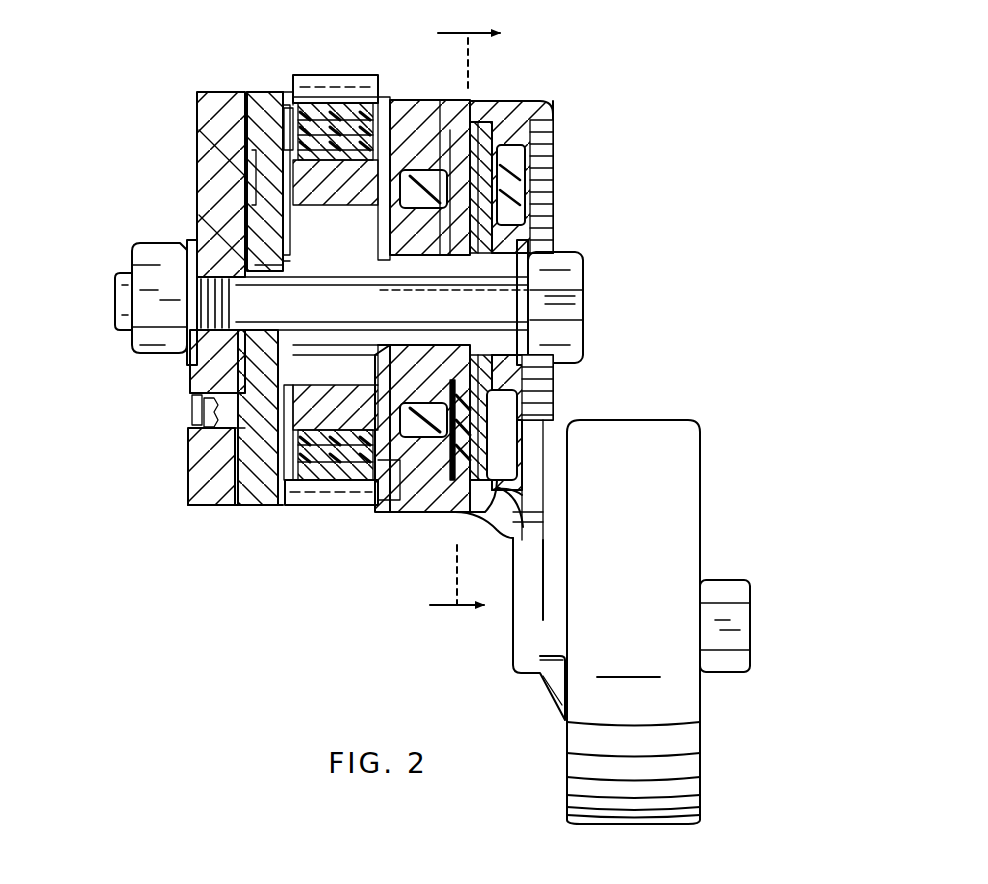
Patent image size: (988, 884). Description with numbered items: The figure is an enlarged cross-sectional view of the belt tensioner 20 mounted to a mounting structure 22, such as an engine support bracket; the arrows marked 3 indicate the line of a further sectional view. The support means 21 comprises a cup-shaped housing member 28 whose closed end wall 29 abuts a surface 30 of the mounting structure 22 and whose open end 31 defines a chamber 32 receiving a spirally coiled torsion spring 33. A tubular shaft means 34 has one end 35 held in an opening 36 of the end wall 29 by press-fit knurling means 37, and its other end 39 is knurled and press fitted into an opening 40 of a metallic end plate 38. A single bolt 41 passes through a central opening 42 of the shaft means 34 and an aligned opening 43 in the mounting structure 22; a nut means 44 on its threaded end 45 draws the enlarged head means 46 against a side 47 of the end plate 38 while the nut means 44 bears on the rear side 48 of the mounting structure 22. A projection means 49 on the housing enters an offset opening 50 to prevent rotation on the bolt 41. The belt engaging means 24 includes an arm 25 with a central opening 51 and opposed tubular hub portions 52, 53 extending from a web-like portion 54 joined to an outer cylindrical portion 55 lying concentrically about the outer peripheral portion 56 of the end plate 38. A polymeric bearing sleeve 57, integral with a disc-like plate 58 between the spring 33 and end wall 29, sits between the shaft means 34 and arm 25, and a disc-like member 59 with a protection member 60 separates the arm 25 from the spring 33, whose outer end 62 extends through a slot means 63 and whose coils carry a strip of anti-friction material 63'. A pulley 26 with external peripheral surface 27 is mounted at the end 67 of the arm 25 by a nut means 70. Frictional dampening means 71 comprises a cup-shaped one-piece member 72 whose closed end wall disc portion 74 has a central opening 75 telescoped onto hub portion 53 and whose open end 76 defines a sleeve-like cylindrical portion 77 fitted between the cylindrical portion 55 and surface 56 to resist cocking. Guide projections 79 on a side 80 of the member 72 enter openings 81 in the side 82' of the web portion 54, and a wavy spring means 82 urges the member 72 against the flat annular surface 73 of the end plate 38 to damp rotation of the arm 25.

The section line 3- 3 is at (465, 326).
The belt tensioner 20 is at (648, 144).
The support means 21 is at (273, 96).
The mounting structure 22 is at (197, 123).
The belt engaging means 24 is at (390, 524).
The belt engaging arm 25 is at (516, 127).
The pulley 26 is at (703, 482).
The external peripheral surface 27 is at (700, 440).
The cup-shaped housing member 28 is at (302, 502).
The closed end wall 29 is at (240, 470).
The surface 30 is at (238, 494).
The open end 31 is at (342, 497).
The chamber 32 is at (318, 507).
The torsion spring 33 is at (338, 122).
The tubular shaft means 34 is at (542, 212).
The one end 35 is at (242, 368).
The opening 36 is at (272, 336).
The press-fit knurling means 37 is at (242, 233).
The end plate 38 is at (538, 248).
The other end 39 is at (566, 370).
The opening 40 is at (390, 286).
The bolt 41 is at (382, 412).
The central opening 42 is at (590, 300).
The aligned opening 43 is at (184, 282).
The nut means 44 is at (188, 342).
The threaded end 45 is at (118, 297).
The enlarged head means 46 is at (592, 272).
The side 47 is at (562, 405).
The rear side 48 is at (245, 182).
The projection means 49 is at (212, 412).
The opening 50 is at (216, 428).
The opening 51 is at (392, 263).
The tubular hub portion 52 is at (247, 198).
The tubular hub portion 53 is at (528, 182).
The web-like portion 54 is at (418, 480).
The outer peripheral cylindrical portion 55 is at (556, 104).
The outer peripheral portion 56 is at (556, 515).
The bearing sleeve 57 is at (376, 352).
The disc-like plate 58 is at (255, 100).
The disc-like member 59 is at (393, 130).
The protection member 60 is at (248, 171).
The outer end 62 is at (311, 80).
The slot means 63 is at (283, 87).
The strip of anti-friction material 63' is at (249, 490).
The end 67 is at (527, 648).
The nut means 70 is at (728, 592).
The frictional dampening means 71 is at (485, 518).
The one-piece member 72 is at (567, 445).
The flat annular surface 73 is at (486, 122).
The closed end wall disc portion 74 is at (532, 152).
The central opening 75 is at (556, 385).
The open end 76 is at (542, 486).
The sleeve-like cylindrical portion 77 is at (536, 117).
The guide projections 79 is at (450, 132).
The side 80 is at (467, 482).
The openings 81 is at (420, 455).
The wavy spring means 82 is at (433, 150).
The side 82' is at (593, 439).